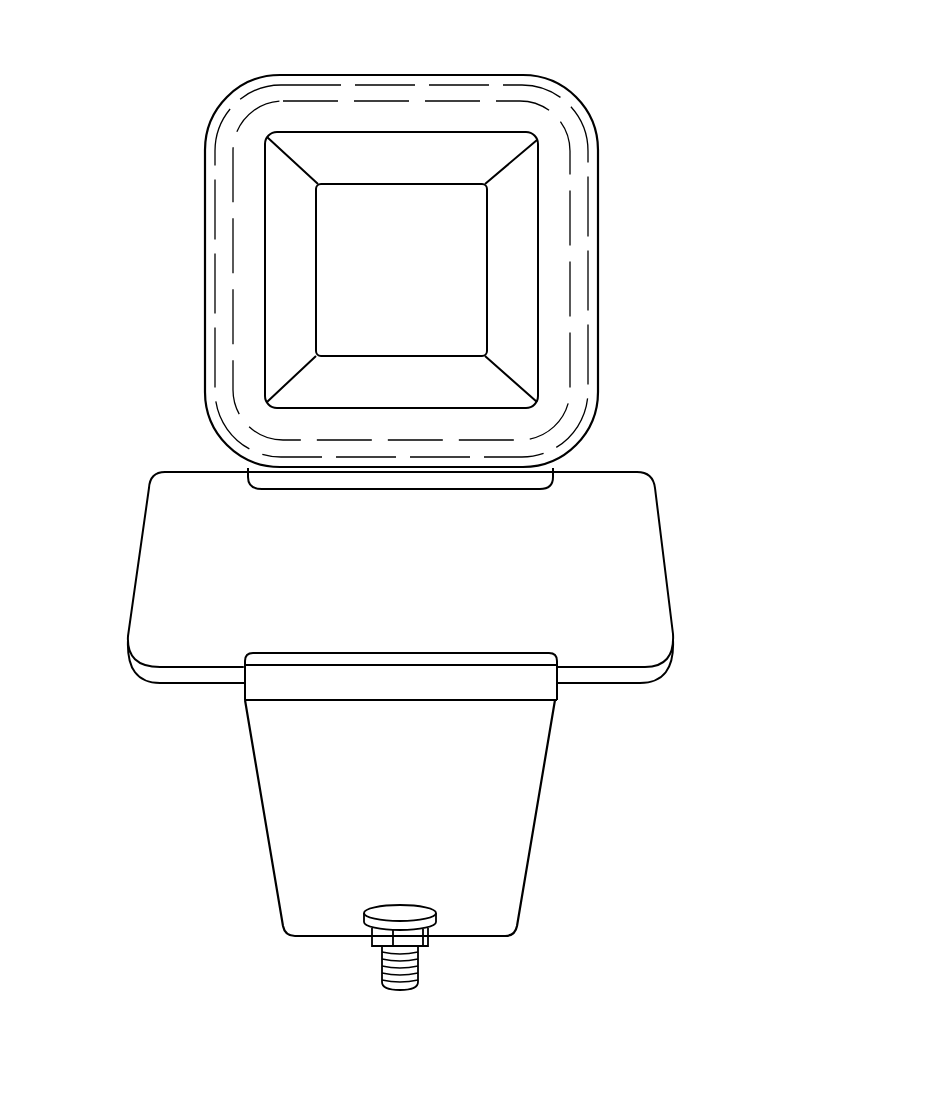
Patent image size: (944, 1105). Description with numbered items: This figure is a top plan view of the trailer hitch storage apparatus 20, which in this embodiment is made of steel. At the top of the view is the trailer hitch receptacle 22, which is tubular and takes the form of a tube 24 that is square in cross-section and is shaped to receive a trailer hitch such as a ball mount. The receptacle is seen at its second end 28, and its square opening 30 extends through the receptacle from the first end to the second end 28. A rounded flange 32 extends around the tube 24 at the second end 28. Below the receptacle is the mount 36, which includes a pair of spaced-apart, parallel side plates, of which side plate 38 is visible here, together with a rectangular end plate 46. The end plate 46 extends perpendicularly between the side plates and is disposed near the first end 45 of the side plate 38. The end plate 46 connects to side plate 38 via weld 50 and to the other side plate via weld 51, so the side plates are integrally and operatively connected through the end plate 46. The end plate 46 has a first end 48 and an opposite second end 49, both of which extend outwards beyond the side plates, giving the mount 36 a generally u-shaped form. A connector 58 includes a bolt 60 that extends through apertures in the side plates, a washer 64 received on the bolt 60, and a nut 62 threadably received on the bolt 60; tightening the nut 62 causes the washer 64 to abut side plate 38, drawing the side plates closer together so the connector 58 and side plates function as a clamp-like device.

The trailer hitch storage apparatus 20 is at (142, 246).
The trailer hitch receptacle 22 is at (603, 195).
The tube 24 is at (598, 272).
The second end 28 is at (252, 145).
The opening 30 is at (378, 208).
The rounded flange 32 is at (582, 107).
The mount 36 is at (226, 817).
The side plate 38 is at (413, 816).
The first end 45 is at (273, 688).
The end plate 46 is at (410, 576).
The first end 48 is at (136, 572).
The second end 49 is at (673, 573).
The weld 50 is at (415, 653).
The weld 51 is at (443, 478).
The connector 58 is at (358, 965).
The bolt 60 is at (400, 988).
The nut 62 is at (433, 942).
The washer 64 is at (420, 906).